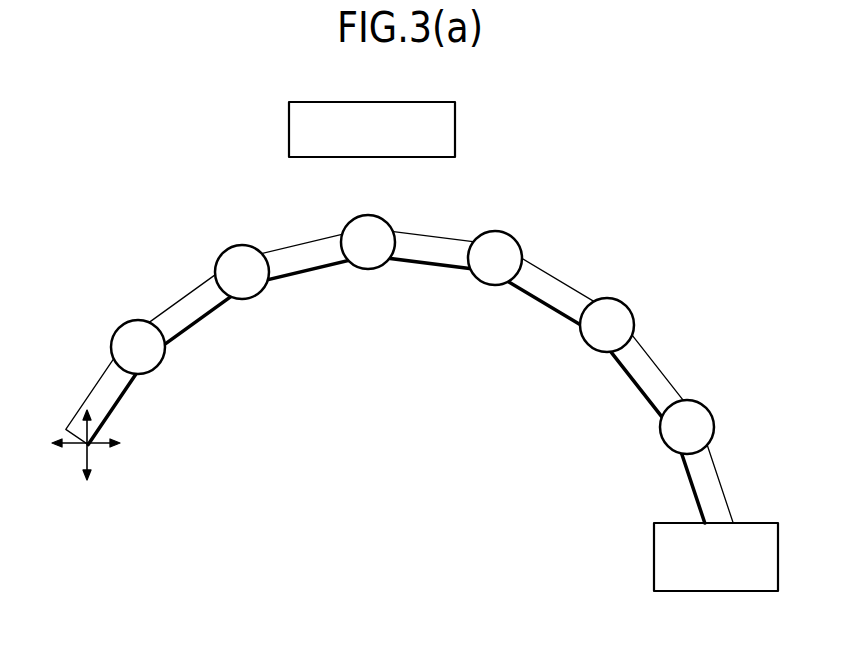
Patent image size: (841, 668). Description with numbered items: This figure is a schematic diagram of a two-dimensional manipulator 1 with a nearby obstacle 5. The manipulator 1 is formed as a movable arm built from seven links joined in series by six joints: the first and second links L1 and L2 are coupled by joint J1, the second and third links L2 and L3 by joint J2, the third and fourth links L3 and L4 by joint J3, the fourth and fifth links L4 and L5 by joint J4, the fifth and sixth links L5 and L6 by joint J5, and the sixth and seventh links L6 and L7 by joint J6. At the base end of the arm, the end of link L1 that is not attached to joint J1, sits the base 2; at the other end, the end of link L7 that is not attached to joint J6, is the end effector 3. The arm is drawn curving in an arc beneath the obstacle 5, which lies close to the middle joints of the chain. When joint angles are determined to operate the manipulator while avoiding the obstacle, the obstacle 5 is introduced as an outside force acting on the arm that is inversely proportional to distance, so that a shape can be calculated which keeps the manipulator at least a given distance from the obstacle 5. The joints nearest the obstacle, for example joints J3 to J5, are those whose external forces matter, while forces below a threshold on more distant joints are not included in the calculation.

The manipulator 1 is at (411, 348).
The base 2 is at (654, 555).
The end effector 3 is at (98, 455).
The obstacle 5 is at (457, 128).
The first link L1 is at (728, 495).
The second link L2 is at (665, 363).
The third link L3 is at (562, 273).
The fourth link L4 is at (435, 228).
The fifth link L5 is at (307, 233).
The sixth link L6 is at (183, 288).
The seventh link L7 is at (87, 395).
The joint J1 is at (660, 437).
The joint J2 is at (587, 348).
The joint J3 is at (492, 288).
The joint J4 is at (372, 270).
The joint J5 is at (255, 298).
The joint J6 is at (162, 367).